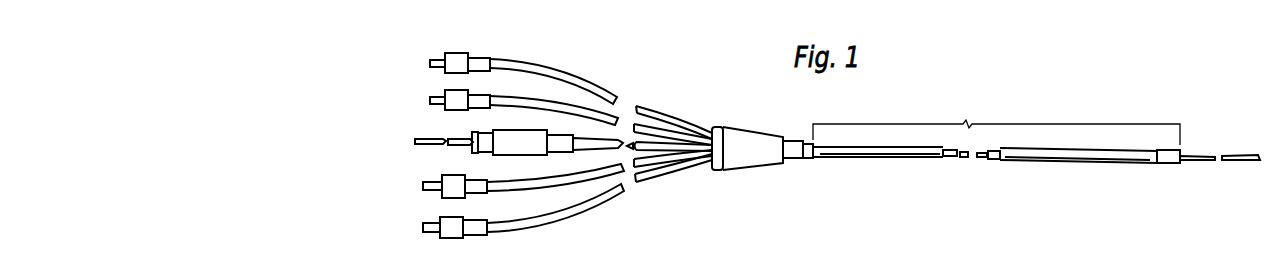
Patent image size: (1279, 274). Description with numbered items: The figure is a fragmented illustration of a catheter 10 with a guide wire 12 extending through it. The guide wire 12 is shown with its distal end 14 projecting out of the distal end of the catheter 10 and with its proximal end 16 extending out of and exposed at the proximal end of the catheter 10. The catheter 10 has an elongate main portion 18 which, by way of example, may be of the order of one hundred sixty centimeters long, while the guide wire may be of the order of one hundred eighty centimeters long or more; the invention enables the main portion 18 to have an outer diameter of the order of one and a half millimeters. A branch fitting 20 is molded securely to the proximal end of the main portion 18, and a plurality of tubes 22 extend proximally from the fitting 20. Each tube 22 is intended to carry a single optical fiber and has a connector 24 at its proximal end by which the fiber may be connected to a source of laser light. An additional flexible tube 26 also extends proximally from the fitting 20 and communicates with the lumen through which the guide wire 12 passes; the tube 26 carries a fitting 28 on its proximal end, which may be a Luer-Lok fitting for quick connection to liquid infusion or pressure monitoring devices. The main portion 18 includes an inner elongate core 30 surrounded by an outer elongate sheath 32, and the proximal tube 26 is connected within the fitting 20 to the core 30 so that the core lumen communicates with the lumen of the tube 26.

The catheter 10 is at (996, 160).
The guide wire 12 is at (425, 146).
The distal end of guide wire 14 is at (1253, 158).
The proximal end of guide wire 16 is at (462, 146).
The elongate main portion 18 is at (994, 126).
The branch fitting 20 is at (742, 137).
The tubes 22 is at (541, 101).
The connector 24 is at (448, 92).
The flexible tube 26 is at (603, 150).
The fitting 28 is at (547, 155).
The inner elongate core 30 is at (953, 158).
The outer elongate sheath 32 is at (888, 147).